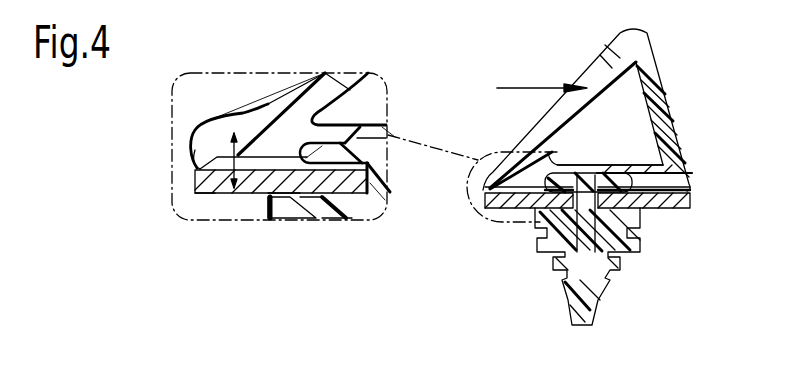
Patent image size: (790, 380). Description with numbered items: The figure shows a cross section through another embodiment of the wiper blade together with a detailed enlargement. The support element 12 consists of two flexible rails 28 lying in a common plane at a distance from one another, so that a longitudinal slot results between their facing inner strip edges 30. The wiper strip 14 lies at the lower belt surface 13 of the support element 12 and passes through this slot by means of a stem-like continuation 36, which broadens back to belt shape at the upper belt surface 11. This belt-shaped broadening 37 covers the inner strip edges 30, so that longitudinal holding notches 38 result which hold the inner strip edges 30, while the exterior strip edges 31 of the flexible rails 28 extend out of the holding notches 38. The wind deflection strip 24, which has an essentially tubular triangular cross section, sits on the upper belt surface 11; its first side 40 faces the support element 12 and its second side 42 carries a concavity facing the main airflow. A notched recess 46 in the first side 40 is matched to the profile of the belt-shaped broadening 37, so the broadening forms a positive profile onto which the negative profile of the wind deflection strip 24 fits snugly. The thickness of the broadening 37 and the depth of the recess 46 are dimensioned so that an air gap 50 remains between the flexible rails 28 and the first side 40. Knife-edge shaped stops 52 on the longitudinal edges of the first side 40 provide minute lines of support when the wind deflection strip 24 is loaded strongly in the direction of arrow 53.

The upper belt surface 11 is at (284, 155).
The support element 12 is at (692, 215).
The lower belt surface 13 is at (212, 185).
The wiper strip 14 is at (615, 280).
The wind deflection strip 24 is at (242, 110).
The flexible rails 28 is at (284, 186).
The inner strip edges 30 is at (352, 186).
The exterior strip edges 31 is at (195, 195).
The stem-like continuation 36 is at (369, 176).
The belt-shaped broadening 37 is at (357, 145).
The longitudinal holding notches 38 is at (296, 152).
The first side 40 is at (640, 161).
The second side 42 is at (612, 73).
The notched recess 46 is at (339, 184).
The air gap 50 is at (238, 195).
The knife-edge shaped stops 52 is at (205, 160).
The arrow 53 is at (522, 88).